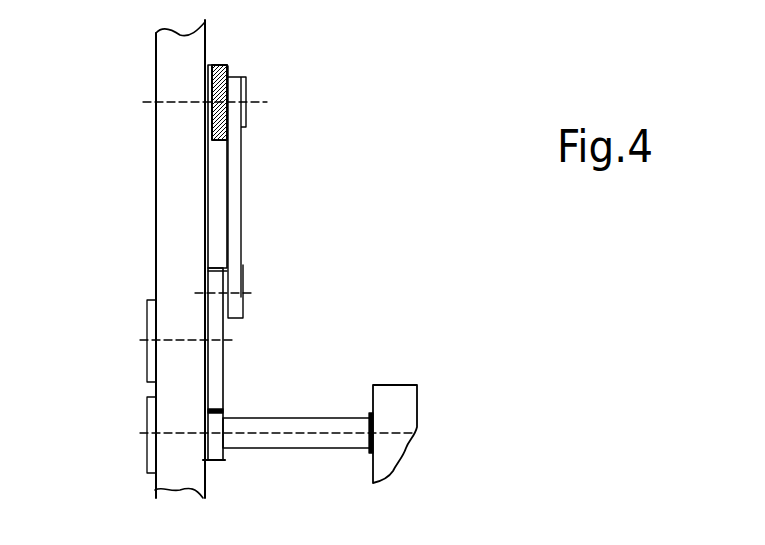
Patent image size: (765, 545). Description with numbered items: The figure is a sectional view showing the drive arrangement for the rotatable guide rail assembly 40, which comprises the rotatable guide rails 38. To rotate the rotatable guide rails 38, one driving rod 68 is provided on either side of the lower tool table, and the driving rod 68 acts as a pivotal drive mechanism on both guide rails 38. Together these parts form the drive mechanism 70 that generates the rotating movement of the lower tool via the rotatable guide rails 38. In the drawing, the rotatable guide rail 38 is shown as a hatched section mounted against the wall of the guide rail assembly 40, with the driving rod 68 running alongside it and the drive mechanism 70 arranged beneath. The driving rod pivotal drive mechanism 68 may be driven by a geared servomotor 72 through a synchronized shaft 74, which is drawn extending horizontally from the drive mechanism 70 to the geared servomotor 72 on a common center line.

The rotatable guide rail 38 is at (228, 66).
The rotatable guide rail assembly 40 is at (147, 212).
The driving rod 68 is at (241, 192).
The drive mechanism 70 is at (218, 360).
The geared servomotor 72 is at (404, 410).
The synchronized shaft 74 is at (305, 418).